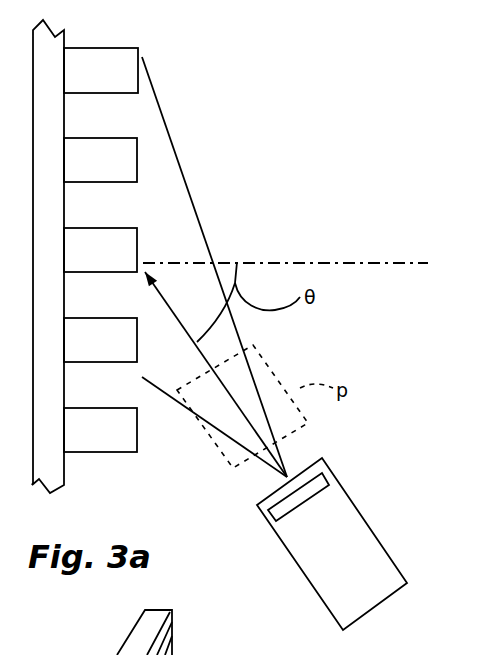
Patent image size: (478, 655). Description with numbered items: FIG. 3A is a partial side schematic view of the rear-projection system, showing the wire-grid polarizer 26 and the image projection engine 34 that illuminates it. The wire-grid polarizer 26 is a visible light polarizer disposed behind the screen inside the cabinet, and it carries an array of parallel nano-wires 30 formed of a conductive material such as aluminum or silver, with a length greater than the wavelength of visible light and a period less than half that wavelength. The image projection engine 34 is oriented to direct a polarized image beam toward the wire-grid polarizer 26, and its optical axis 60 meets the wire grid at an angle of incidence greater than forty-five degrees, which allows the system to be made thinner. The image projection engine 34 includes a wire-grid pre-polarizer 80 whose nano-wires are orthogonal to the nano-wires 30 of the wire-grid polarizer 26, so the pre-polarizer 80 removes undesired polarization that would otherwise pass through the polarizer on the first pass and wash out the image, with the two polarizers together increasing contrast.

The wire-grid polarizer 26 is at (88, 490).
The parallel nano-wires 30 is at (88, 48).
The optical axis 60 is at (177, 311).
The image projection engine 34 is at (377, 535).
The wire-grid pre-polarizer 80 is at (328, 470).